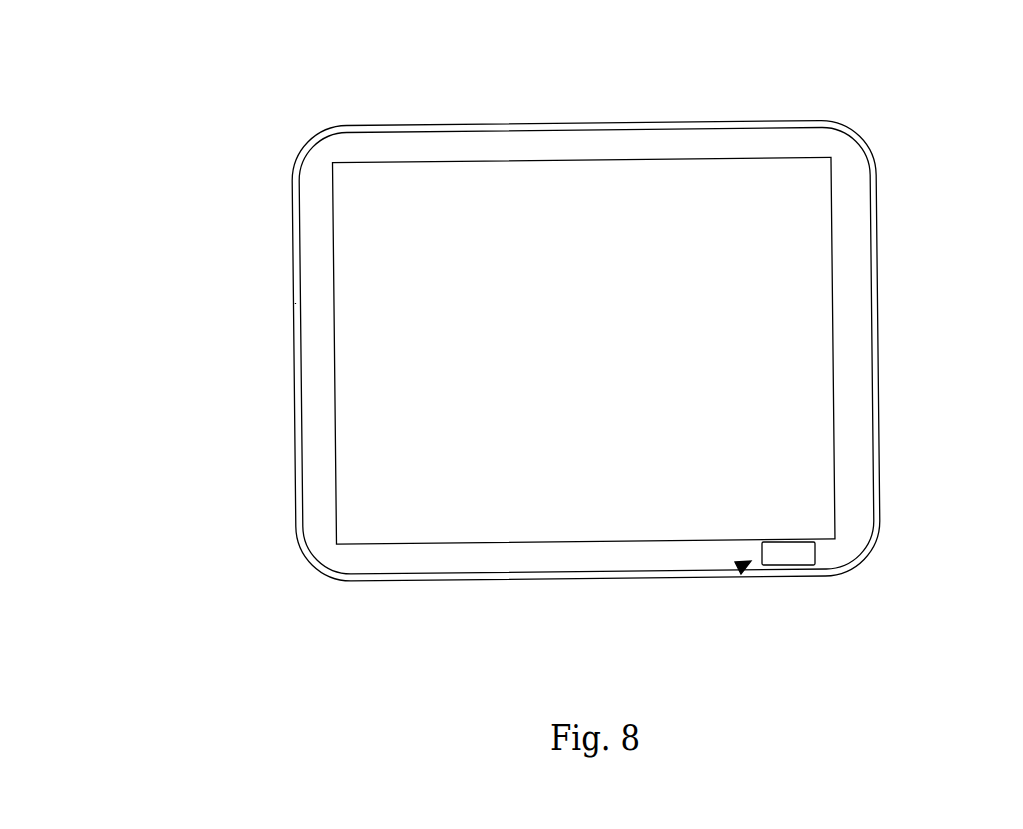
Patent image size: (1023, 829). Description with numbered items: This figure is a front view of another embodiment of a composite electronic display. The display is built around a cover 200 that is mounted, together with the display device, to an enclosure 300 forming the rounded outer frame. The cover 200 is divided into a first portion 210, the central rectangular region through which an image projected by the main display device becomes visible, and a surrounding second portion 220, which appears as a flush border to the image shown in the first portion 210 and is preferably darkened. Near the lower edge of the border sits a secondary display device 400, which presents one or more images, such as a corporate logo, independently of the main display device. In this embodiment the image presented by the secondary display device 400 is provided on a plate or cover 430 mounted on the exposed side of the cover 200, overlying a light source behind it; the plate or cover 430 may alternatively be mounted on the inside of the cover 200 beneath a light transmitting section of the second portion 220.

The cover 200 is at (302, 492).
The first portion 210 is at (479, 387).
The second portion 220 is at (317, 212).
The enclosure 300 is at (853, 143).
The secondary display device 400 is at (745, 564).
The plate or cover 430 is at (803, 555).